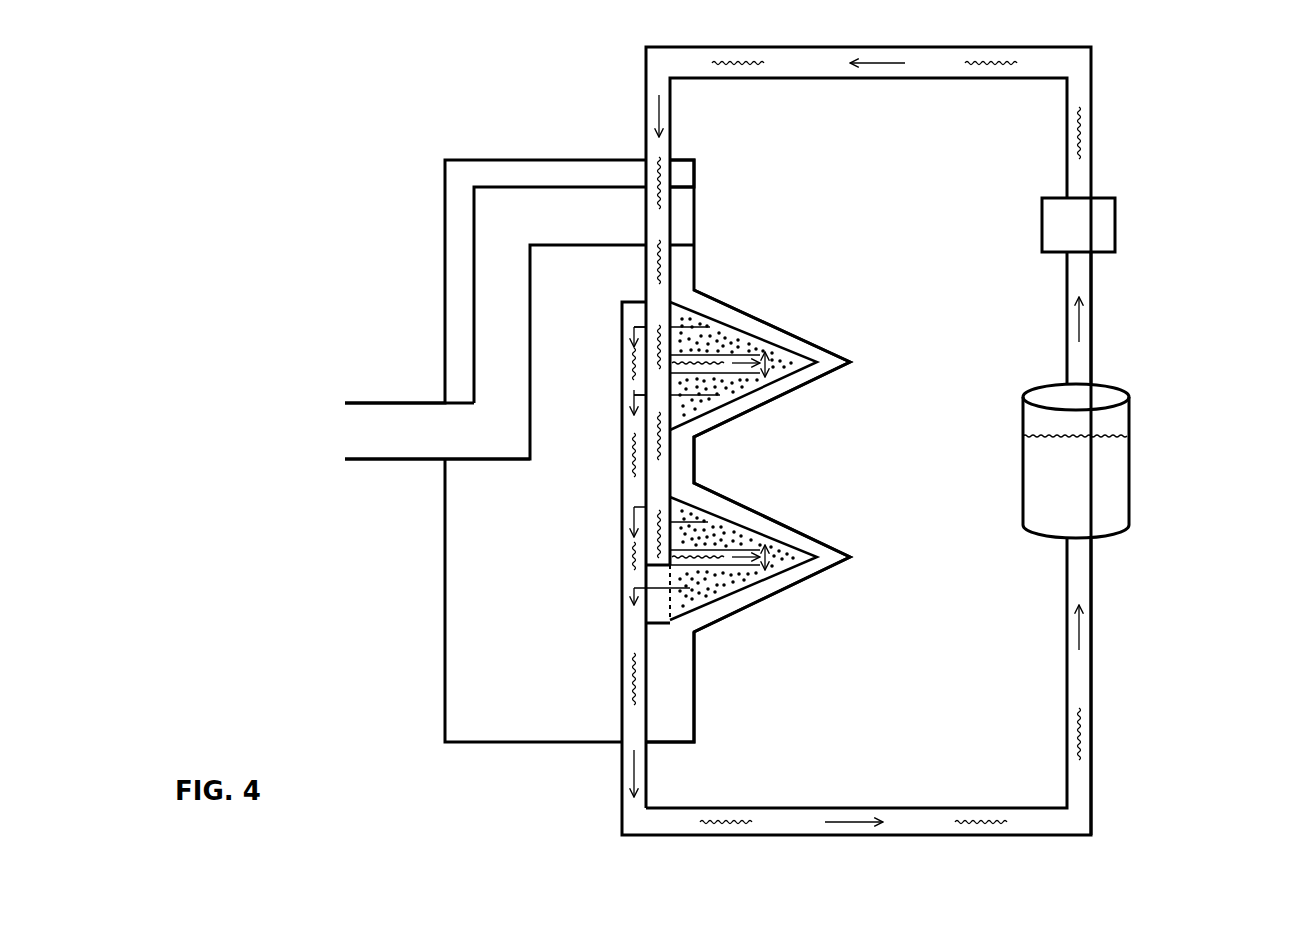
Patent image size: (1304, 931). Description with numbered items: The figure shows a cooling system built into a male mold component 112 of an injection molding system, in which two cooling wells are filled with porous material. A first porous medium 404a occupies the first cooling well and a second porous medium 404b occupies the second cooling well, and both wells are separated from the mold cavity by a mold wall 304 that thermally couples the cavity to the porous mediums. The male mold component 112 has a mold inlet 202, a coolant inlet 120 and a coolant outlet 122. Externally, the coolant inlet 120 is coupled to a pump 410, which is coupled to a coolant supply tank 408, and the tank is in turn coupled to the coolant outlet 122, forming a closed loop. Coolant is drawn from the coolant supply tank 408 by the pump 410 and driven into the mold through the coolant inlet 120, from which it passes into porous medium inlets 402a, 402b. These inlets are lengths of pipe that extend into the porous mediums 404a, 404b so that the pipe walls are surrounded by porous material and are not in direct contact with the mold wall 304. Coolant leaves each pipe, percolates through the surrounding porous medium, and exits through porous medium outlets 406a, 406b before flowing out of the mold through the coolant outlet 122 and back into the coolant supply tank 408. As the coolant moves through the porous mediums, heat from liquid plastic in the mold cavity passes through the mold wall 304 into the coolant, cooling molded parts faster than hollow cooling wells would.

The male mold component 112 is at (443, 159).
The coolant inlet 120 is at (674, 155).
The coolant outlet 122 is at (651, 727).
The mold inlet 202 is at (353, 432).
The mold wall 304 is at (739, 301).
The porous medium inlet 402a is at (746, 378).
The porous medium inlet 402b is at (748, 569).
The porous medium 404a is at (788, 351).
The porous medium 404b is at (789, 543).
The porous medium outlet 406a is at (634, 424).
The porous medium outlet 406b is at (652, 608).
The coolant supply tank 408 is at (1147, 461).
The pump 410 is at (1123, 225).